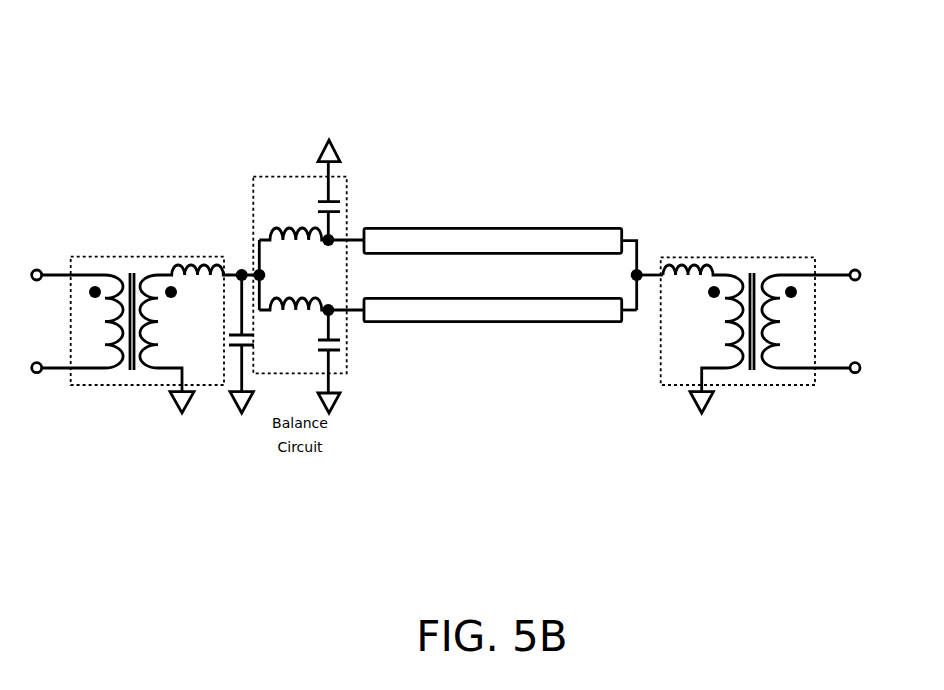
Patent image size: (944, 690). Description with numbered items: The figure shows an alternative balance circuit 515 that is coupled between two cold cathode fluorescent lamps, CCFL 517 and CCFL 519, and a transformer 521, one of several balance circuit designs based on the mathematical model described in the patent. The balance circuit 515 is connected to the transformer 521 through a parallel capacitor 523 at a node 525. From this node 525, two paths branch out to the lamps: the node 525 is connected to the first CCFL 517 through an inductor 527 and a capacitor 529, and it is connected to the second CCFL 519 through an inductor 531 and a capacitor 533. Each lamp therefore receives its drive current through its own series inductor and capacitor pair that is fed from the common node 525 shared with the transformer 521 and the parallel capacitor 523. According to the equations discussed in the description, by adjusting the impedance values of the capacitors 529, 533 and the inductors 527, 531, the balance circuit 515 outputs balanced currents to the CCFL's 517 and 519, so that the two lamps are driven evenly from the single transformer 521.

The balance circuit 515 is at (300, 177).
The CCFL 517 is at (578, 235).
The CCFL 519 is at (580, 317).
The transformer 521 is at (127, 387).
The parallel capacitor 523 is at (223, 350).
The node 525 is at (218, 263).
The inductor 527 is at (277, 217).
The capacitor 529 is at (347, 200).
The inductor 531 is at (293, 317).
The capacitor 533 is at (347, 350).